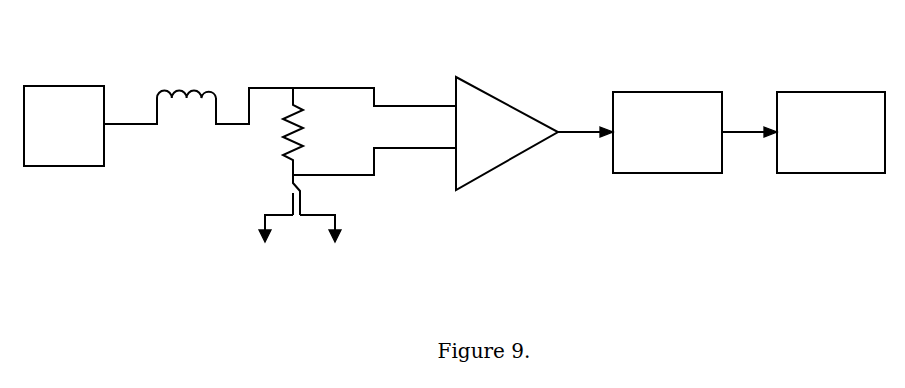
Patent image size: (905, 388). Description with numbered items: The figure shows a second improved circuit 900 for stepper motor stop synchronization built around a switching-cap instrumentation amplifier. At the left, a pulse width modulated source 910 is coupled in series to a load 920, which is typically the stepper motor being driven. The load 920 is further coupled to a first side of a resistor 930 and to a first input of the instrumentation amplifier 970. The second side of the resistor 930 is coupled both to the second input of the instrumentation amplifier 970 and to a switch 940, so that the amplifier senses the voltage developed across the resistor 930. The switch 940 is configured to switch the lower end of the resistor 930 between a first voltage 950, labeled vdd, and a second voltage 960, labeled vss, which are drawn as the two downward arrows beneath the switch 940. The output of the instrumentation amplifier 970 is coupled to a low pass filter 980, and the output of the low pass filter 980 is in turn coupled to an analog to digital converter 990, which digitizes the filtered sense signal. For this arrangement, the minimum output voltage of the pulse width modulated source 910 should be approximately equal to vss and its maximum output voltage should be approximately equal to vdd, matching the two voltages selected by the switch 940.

The second improved circuit 900 is at (87, 53).
The pulse width modulated source 910 is at (64, 140).
The load 920 is at (186, 111).
The resistor 930 is at (317, 131).
The switch 940 is at (264, 186).
The first voltage 950 is at (269, 257).
The second voltage 960 is at (335, 257).
The instrumentation amplifier 970 is at (507, 126).
The low pass filter 980 is at (667, 120).
The analog to digital converter 990 is at (831, 120).